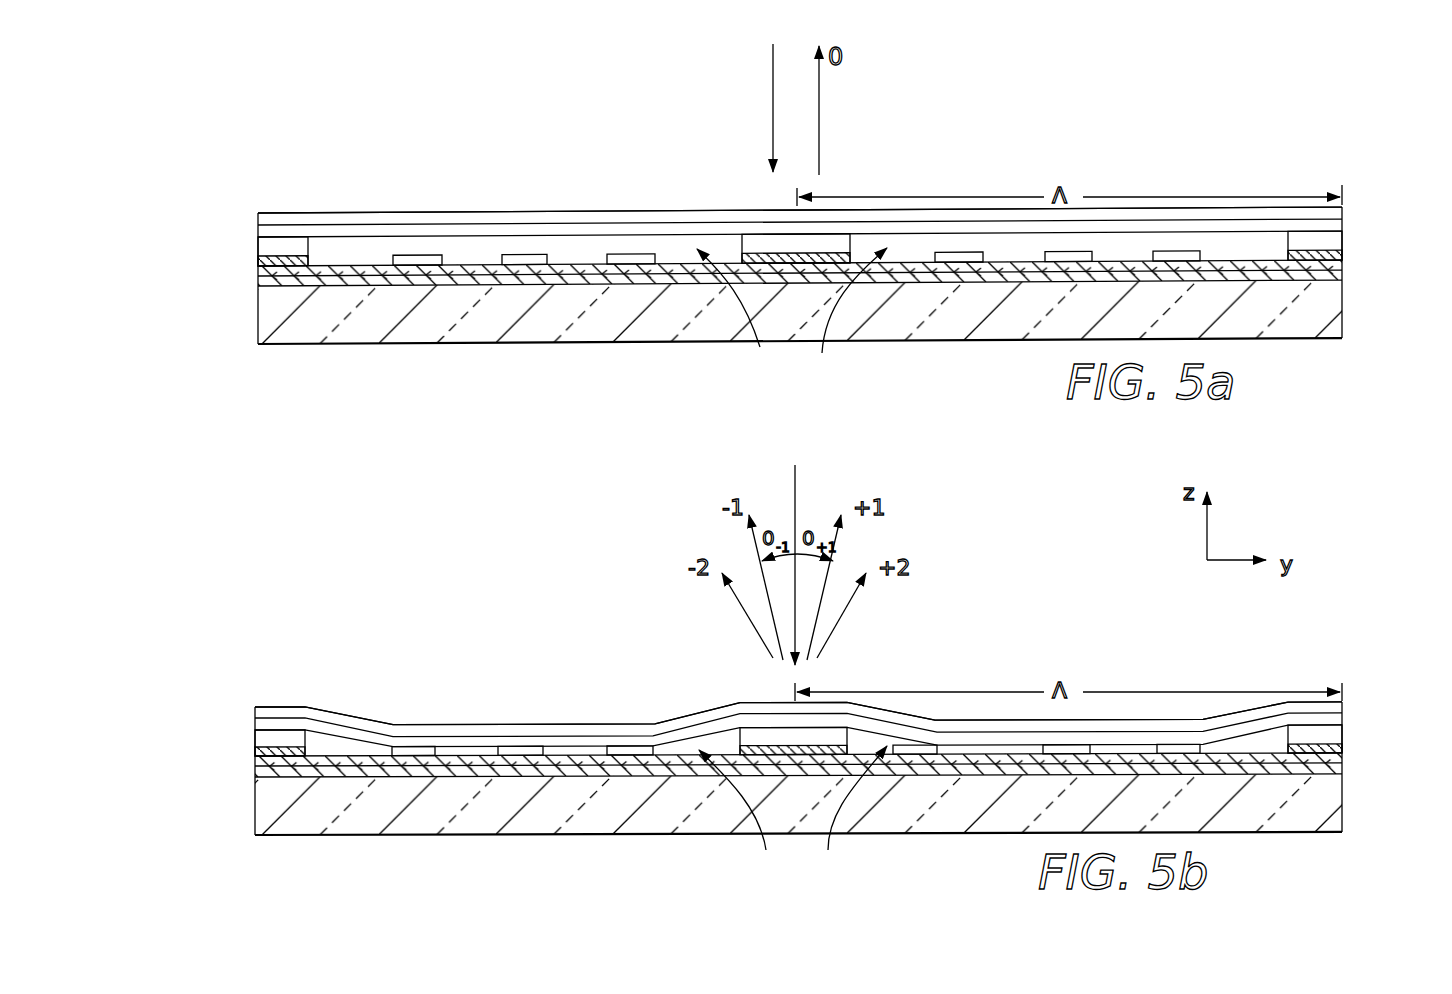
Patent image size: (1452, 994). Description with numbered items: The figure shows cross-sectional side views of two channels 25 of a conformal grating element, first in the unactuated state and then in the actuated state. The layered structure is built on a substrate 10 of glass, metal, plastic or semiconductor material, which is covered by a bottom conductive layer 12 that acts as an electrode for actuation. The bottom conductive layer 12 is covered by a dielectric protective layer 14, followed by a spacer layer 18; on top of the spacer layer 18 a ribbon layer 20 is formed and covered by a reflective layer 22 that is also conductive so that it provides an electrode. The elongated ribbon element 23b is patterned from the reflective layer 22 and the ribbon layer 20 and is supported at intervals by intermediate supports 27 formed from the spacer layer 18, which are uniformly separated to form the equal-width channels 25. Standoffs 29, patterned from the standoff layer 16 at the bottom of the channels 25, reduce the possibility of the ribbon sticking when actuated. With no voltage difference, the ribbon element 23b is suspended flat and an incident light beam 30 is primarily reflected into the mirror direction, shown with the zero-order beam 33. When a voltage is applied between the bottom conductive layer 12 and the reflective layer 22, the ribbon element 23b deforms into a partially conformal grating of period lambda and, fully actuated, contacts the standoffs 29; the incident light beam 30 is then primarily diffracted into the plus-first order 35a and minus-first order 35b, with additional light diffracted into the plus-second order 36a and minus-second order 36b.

In FIG. 5A, the substrate 10 is at (288, 330).
In FIG. 5B, the substrate 10 is at (268, 805).
In FIG. 5A, the bottom conductive layer 12 is at (258, 287).
In FIG. 5B, the bottom conductive layer 12 is at (255, 779).
In FIG. 5A, the dielectric protective layer 14 is at (258, 273).
In FIG. 5B, the dielectric protective layer 14 is at (255, 767).
In FIG. 5A, the standoff layer 16 is at (258, 263).
In FIG. 5B, the standoff layer 16 is at (255, 757).
In FIG. 5A, the spacer layer 18 is at (258, 241).
In FIG. 5B, the spacer layer 18 is at (255, 733).
In FIG. 5A, the ribbon layer 20 is at (258, 227).
In FIG. 5B, the ribbon layer 20 is at (255, 720).
In FIG. 5A, the reflective layer 22 is at (258, 214).
In FIG. 5B, the reflective layer 22 is at (255, 708).
In FIG. 5A, the elongated ribbon element 23b is at (465, 213).
In FIG. 5B, the elongated ribbon element 23b is at (470, 725).
In FIG. 5A, the channels 25 is at (792, 315).
In FIG. 5B, the channels 25 is at (793, 810).
In FIG. 5A, the intermediate supports 27 is at (748, 245).
In FIG. 5B, the intermediate supports 27 is at (752, 735).
In FIG. 5A, the standoffs 29 is at (405, 256).
In FIG. 5B, the standoffs 29 is at (415, 752).
In FIG. 5A, the incident light beam 30 is at (773, 108).
In FIG. 5B, the incident light beam 30 is at (793, 512).
In FIG. 5A, the zero order reflected beam 33 is at (819, 110).
In FIG. 5B, the +1st order 35a is at (836, 550).
In FIG. 5B, the −1st order 35b is at (760, 566).
In FIG. 5B, the +2nd order 36a is at (845, 613).
In FIG. 5B, the −2nd order 36b is at (753, 625).